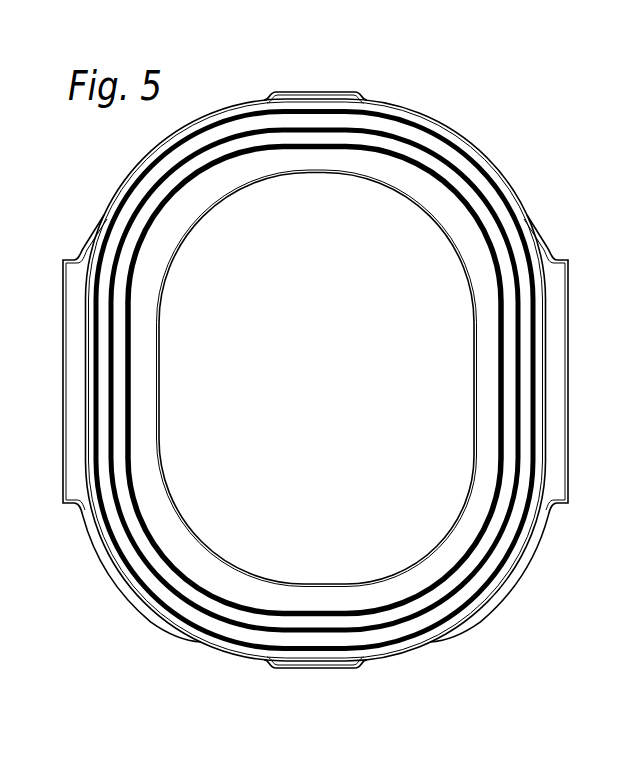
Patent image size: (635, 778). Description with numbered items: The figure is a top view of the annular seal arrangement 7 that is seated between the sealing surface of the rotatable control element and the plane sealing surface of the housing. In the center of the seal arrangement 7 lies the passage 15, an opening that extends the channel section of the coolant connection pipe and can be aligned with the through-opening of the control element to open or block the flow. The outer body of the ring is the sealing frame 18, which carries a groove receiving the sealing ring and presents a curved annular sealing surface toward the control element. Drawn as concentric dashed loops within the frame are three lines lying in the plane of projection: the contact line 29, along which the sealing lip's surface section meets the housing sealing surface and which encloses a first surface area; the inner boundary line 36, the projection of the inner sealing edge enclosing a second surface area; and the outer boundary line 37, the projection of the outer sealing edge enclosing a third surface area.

The seal arrangement 7 is at (425, 100).
The passage 15 is at (412, 242).
The sealing frame 18 is at (547, 273).
The contact line 29 is at (158, 540).
The inner boundary line 36 is at (160, 577).
The outer boundary line 37 is at (130, 560).